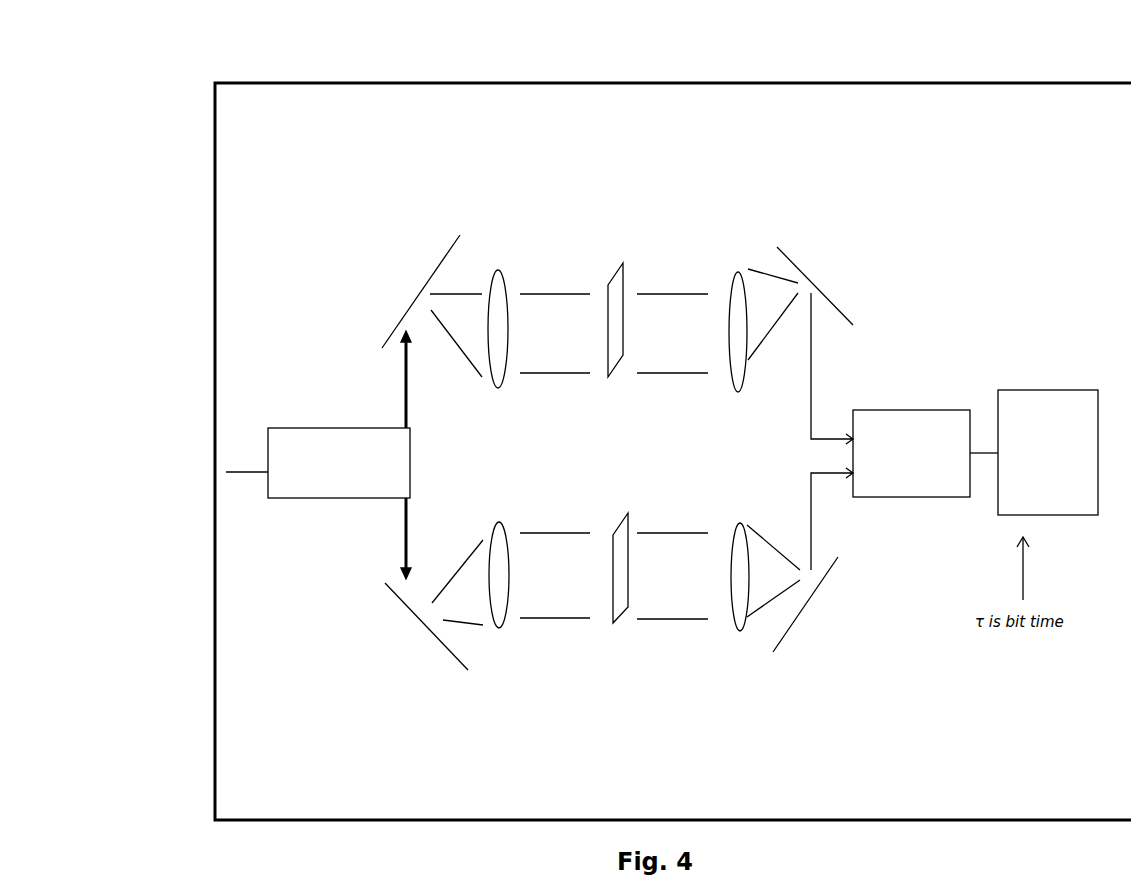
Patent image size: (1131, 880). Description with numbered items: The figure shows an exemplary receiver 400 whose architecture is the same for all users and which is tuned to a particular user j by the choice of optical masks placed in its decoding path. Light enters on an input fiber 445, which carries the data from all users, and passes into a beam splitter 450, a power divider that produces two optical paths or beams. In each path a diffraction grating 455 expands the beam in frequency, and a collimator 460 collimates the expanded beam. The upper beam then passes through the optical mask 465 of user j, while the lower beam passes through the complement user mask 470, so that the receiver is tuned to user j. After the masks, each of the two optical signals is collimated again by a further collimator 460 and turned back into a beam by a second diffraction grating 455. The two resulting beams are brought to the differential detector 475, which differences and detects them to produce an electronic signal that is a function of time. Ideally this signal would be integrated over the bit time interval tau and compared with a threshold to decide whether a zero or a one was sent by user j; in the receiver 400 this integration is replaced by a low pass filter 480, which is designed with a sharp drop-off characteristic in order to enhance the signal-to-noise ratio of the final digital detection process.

The receiver 400 is at (548, 75).
The input fiber 445 is at (246, 470).
The beam splitter 450 is at (339, 455).
The diffraction grating 455 is at (900, 695).
The collimator 460 is at (788, 692).
The user mask 465 is at (617, 245).
The complement user mask 470 is at (623, 625).
The differential detector 475 is at (911, 440).
The low pass filter 480 is at (1048, 430).